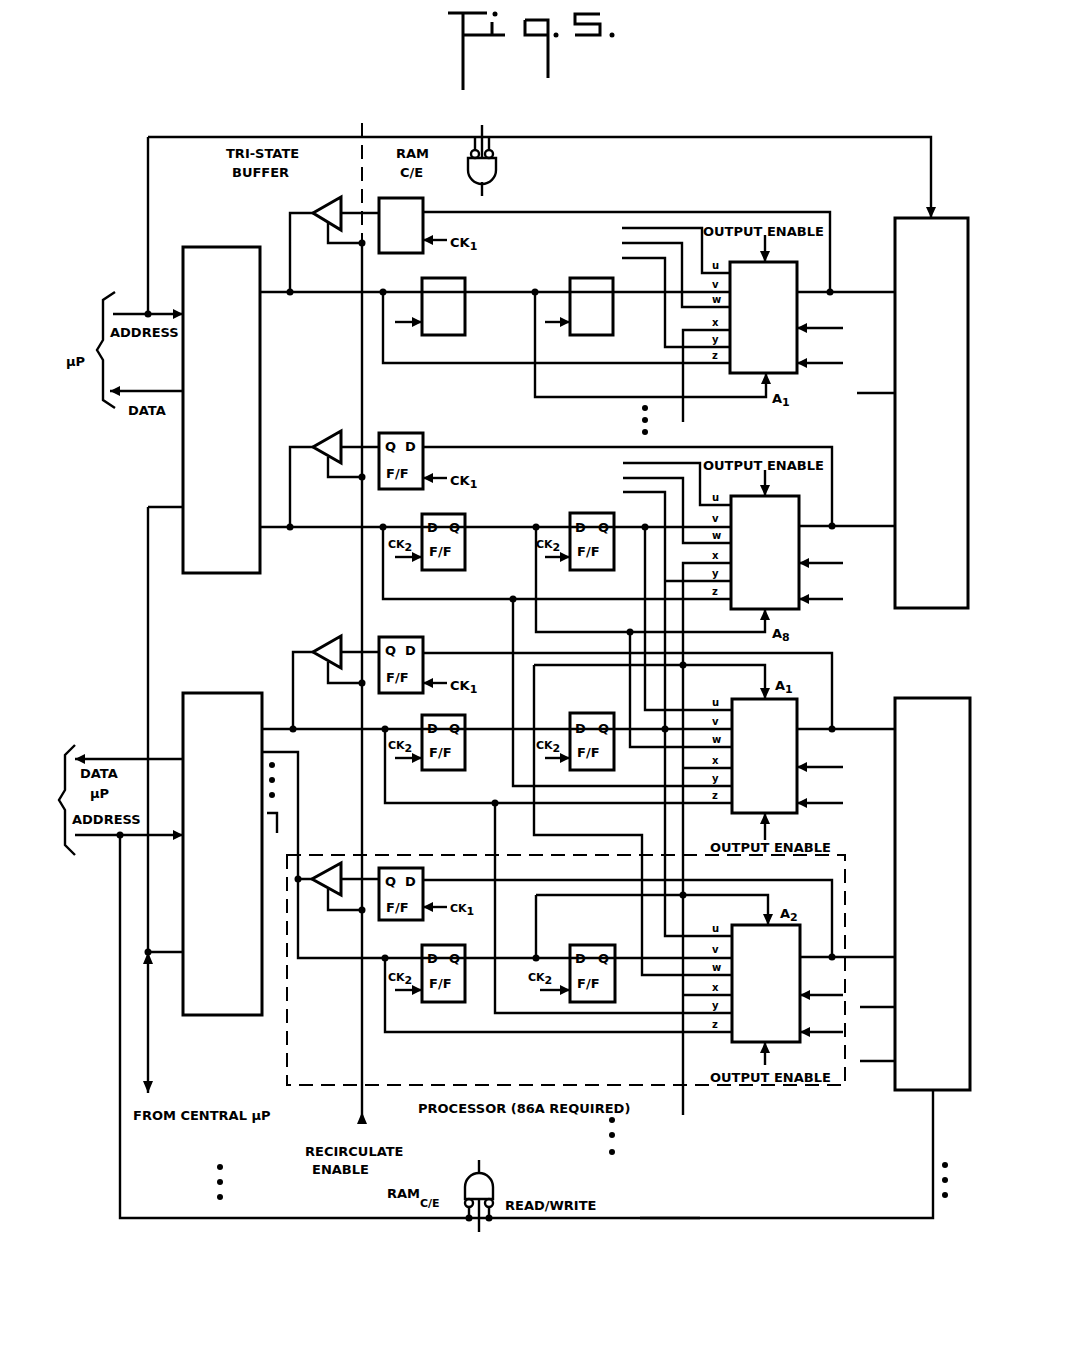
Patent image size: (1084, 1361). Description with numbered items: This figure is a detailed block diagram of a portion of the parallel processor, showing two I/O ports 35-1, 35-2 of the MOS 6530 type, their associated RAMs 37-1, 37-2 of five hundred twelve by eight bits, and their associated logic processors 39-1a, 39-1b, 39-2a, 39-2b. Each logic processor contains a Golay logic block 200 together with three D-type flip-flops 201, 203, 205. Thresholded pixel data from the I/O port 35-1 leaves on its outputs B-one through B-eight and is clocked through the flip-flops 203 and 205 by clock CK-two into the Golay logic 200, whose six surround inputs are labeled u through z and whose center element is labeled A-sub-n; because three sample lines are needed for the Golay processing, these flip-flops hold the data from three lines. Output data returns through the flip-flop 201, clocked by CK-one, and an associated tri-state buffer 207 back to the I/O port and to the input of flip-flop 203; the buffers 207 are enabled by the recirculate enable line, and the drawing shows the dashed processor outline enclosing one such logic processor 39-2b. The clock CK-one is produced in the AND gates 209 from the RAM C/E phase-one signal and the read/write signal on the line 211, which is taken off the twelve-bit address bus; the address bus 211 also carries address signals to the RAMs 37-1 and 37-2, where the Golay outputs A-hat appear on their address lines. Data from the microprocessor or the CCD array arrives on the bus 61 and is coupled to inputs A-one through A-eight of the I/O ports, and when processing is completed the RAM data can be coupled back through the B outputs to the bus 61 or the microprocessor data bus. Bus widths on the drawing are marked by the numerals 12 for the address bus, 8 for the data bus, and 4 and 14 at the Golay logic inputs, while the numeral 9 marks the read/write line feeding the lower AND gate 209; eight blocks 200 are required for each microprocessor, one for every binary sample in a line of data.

The I/O port 35-1 is at (217, 250).
The I/O port 35-2 is at (222, 692).
The RAM 37-1 is at (952, 214).
The RAM 37-2 is at (940, 697).
The logic processor 39-1a is at (846, 293).
The logic processor 39-1b is at (847, 459).
The logic processor 39-2a is at (846, 746).
The logic processor 39-2b is at (847, 997).
The Golay logic block 200 is at (792, 272).
The D type flip-flop 201 is at (423, 208).
The D type flip-flop 203 is at (465, 283).
The D type flip-flop 205 is at (590, 280).
The buffer 207 is at (326, 207).
The AND gate 209 is at (498, 170).
The address bus line 211 is at (700, 136).
The data bus 61 is at (148, 1036).
The 4-bit input 4 is at (815, 322).
The 14-bit input 14 is at (820, 358).
The 8-bit data bus 8 is at (135, 378).
The 12-bit address bus 12 is at (132, 300).
The read/write line 9 is at (670, 1203).